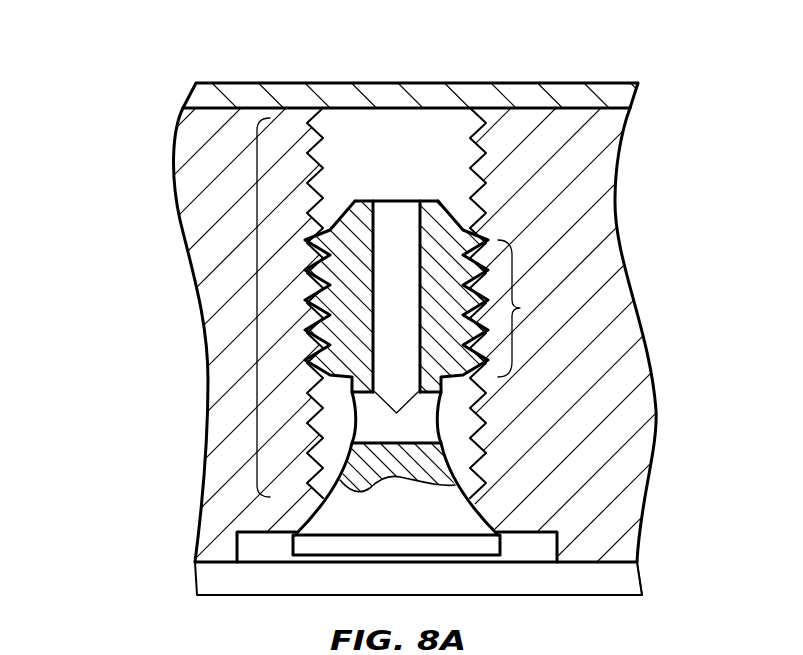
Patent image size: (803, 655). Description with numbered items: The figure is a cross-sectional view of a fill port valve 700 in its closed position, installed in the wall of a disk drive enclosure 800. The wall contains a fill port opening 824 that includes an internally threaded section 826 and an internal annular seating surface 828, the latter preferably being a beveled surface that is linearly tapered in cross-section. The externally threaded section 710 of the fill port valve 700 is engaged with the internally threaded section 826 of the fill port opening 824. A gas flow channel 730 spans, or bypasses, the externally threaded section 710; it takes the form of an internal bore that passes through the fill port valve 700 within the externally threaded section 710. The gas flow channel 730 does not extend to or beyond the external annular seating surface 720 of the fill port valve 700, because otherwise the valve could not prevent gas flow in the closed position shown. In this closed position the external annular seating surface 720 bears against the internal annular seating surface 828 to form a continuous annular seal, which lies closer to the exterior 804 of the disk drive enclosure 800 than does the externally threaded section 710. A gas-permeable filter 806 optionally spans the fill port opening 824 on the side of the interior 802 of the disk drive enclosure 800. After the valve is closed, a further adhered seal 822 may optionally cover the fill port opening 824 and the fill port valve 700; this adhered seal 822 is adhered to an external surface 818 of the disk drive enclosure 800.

The fill port valve 700 is at (429, 294).
The externally threaded section 710 is at (520, 308).
The external annular seating surface 720 is at (455, 452).
The gas flow channel 730 is at (395, 232).
The disk drive enclosure 800 is at (188, 182).
The interior 802 is at (260, 62).
The exterior 804 is at (278, 635).
The gas-permeable filter 806 is at (523, 95).
The external surface 818 is at (610, 583).
The adhered seal 822 is at (533, 583).
The fill port opening 824 is at (433, 124).
The internally threaded section 826 is at (256, 323).
The internal annular seating surface 828 is at (294, 517).